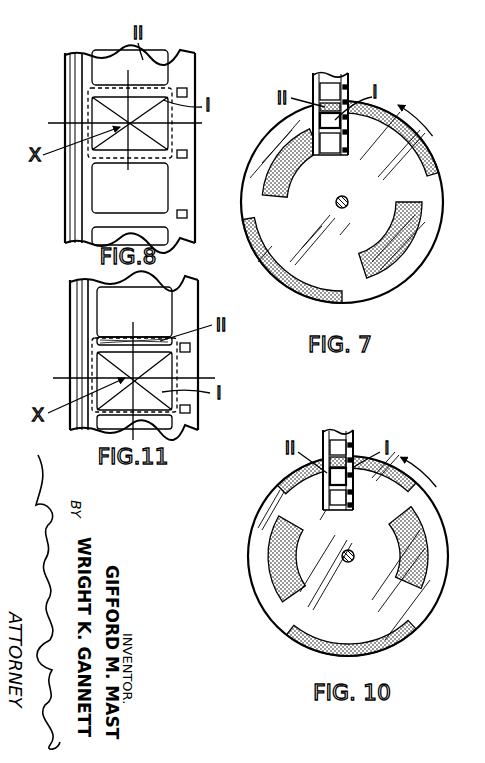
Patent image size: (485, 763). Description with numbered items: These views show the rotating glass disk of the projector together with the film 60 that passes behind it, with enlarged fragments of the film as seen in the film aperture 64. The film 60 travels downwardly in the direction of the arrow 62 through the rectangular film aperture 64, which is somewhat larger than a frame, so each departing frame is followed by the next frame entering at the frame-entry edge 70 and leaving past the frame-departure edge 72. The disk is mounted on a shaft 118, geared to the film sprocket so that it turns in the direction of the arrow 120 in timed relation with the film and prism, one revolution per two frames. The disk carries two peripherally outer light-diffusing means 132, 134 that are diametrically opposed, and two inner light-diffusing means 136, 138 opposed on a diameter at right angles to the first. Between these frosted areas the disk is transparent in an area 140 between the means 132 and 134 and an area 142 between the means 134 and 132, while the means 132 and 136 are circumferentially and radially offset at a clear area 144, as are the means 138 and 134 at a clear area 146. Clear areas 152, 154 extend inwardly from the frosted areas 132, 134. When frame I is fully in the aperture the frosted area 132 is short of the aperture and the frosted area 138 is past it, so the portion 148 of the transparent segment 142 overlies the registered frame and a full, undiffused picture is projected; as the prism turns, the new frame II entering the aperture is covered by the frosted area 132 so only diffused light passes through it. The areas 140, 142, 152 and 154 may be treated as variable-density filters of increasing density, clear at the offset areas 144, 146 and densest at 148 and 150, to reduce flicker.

In FIG. 8, the film 60 is at (183, 53).
In FIG. 11, the film 60 is at (185, 293).
In FIG. 7, the film 60 is at (341, 74).
In FIG. 10, the film 60 is at (343, 431).
In FIG. 8, the arrow 62 is at (210, 47).
In FIG. 11, the arrow 62 is at (213, 315).
In FIG. 7, the arrow 62 is at (307, 50).
In FIG. 10, the arrow 62 is at (313, 447).
In FIG. 8, the film aperture 64 is at (172, 138).
In FIG. 11, the film aperture 64 is at (177, 363).
In FIG. 7, the film aperture 64 is at (315, 117).
In FIG. 10, the film aperture 64 is at (325, 477).
In FIG. 8, the frame-entry edge 70 is at (110, 92).
In FIG. 11, the frame-entry edge 70 is at (125, 336).
In FIG. 8, the frame-departure edge 72 is at (121, 160).
In FIG. 11, the frame-departure edge 72 is at (127, 415).
In FIG. 7, the shaft 118 is at (345, 196).
In FIG. 10, the shaft 118 is at (352, 551).
In FIG. 7, the arrow 120 is at (435, 134).
In FIG. 10, the arrow 120 is at (438, 485).
In FIG. 7, the peripherally outer light-diffusing means 132 is at (440, 173).
In FIG. 10, the peripherally outer light-diffusing means 132 is at (357, 458).
In FIG. 7, the peripherally outer light-diffusing means 134 is at (281, 277).
In FIG. 10, the peripherally outer light-diffusing means 134 is at (382, 652).
In FIG. 7, the inner light-diffusing means 136 is at (358, 260).
In FIG. 10, the inner light-diffusing means 136 is at (422, 585).
In FIG. 7, the inner light-diffusing means 138 is at (291, 172).
In FIG. 10, the inner light-diffusing means 138 is at (268, 543).
In FIG. 7, the transparent area 140 is at (419, 263).
In FIG. 7, the transparent area 142 is at (249, 167).
In FIG. 10, the transparent area 142 is at (253, 570).
In FIG. 7, the offset area 144 is at (440, 197).
In FIG. 10, the offset area 144 is at (430, 495).
In FIG. 7, the offset area 146 is at (252, 214).
In FIG. 10, the offset area 146 is at (278, 620).
In FIG. 7, the portion of transparent segment 148 is at (330, 108).
In FIG. 10, the portion of transparent segment 148 is at (268, 503).
In FIG. 7, the portion of transparent area 150 is at (356, 291).
In FIG. 10, the portion of transparent area 150 is at (425, 617).
In FIG. 7, the clear area 152 is at (390, 166).
In FIG. 10, the clear area 152 is at (362, 485).
In FIG. 7, the clear area 154 is at (291, 251).
In FIG. 10, the clear area 154 is at (337, 627).